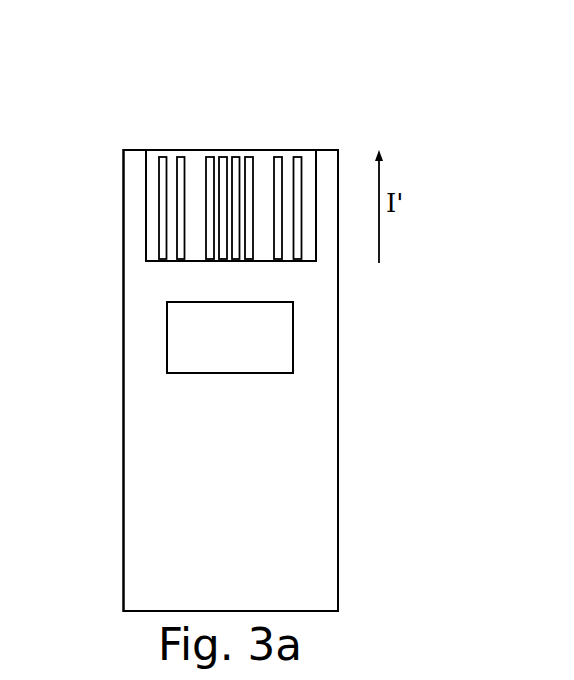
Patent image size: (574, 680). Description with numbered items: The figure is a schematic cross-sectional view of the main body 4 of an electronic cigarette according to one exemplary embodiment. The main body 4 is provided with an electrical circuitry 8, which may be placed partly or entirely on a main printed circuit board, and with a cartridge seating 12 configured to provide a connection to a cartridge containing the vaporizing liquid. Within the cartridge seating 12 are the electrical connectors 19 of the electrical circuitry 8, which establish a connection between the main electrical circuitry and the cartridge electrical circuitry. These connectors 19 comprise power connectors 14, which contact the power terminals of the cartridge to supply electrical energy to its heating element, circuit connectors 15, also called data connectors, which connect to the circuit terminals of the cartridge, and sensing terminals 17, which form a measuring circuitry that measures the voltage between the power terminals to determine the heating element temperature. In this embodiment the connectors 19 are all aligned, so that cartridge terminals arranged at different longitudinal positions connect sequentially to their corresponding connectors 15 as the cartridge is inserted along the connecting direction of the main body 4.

The electrical connectors 19 is at (121, 106).
The main body 4 is at (350, 378).
The cartridge seating 12 is at (195, 263).
The circuit connectors 15 is at (182, 203).
The sensing terminals 17 is at (212, 156).
The power connectors 14 is at (223, 156).
The electrical circuitry 8 is at (180, 358).